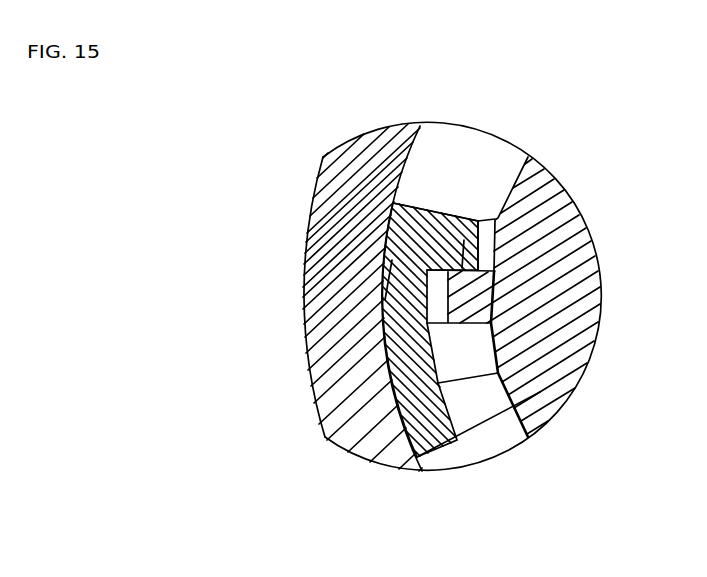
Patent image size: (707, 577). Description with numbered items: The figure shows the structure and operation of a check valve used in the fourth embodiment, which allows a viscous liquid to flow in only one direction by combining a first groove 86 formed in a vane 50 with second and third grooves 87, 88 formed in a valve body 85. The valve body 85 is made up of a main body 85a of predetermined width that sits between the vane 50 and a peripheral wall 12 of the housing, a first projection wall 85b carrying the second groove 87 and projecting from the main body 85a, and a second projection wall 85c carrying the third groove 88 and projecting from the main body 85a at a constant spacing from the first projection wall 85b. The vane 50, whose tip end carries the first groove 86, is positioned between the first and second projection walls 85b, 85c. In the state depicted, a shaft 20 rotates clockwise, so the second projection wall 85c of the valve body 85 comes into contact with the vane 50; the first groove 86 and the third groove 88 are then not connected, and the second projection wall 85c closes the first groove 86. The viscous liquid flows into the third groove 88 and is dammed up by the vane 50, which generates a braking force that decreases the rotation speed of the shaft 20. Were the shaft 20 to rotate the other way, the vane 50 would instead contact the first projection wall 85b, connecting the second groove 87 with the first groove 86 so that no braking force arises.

The peripheral wall 12 is at (339, 412).
The shaft 20 is at (581, 245).
The vane 50 is at (462, 268).
The valve body 85 is at (393, 217).
The main body 85a is at (392, 280).
The first projection wall 85b is at (467, 437).
The second projection wall 85c is at (435, 212).
The first groove 86 is at (433, 310).
The second groove 87 is at (487, 413).
The third groove 88 is at (490, 232).